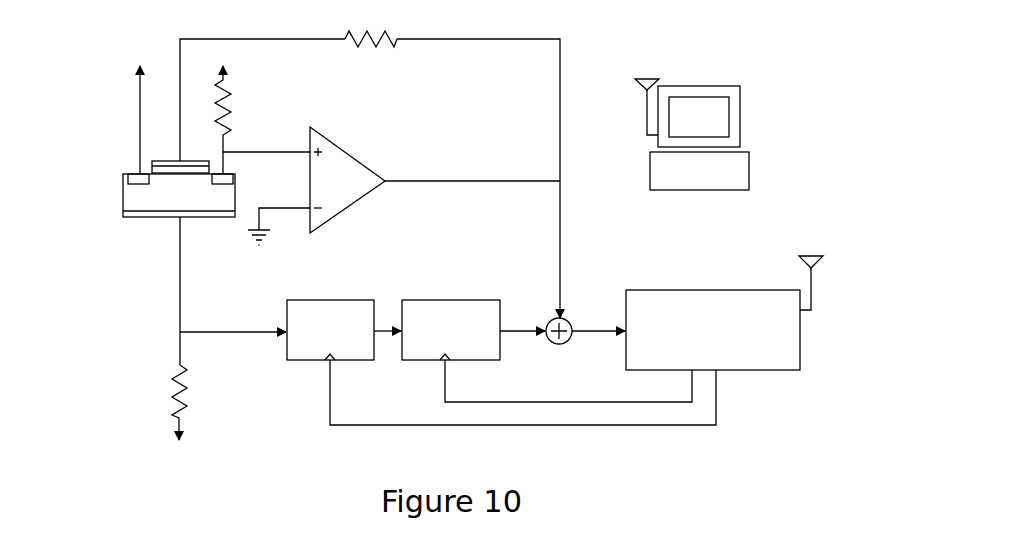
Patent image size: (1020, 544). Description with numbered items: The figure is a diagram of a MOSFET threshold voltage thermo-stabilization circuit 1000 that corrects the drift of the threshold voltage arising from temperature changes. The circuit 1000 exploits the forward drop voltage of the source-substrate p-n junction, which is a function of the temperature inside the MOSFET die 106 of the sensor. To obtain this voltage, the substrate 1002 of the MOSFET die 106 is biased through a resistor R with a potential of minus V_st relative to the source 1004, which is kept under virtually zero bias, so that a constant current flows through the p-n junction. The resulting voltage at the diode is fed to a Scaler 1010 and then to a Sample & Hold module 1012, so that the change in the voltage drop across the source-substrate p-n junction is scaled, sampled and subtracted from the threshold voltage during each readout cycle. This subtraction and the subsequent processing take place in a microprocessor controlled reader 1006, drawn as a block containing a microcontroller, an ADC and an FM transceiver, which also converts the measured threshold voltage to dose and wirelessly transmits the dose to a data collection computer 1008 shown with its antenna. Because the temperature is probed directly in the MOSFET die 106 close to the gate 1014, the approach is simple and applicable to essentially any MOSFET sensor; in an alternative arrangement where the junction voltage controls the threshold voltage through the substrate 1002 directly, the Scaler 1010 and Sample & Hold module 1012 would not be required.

The MOSFET threshold voltage thermo-stabilization circuit 1000 is at (736, 21).
The MOSFET die 106 is at (110, 195).
The substrate 1002 is at (147, 218).
The source 1004 is at (229, 174).
The gate 1014 is at (163, 160).
The microprocessor controlled reader 1006 is at (740, 289).
The data collection computer 1008 is at (630, 162).
The Scaler 1010 is at (330, 299).
The Sample & Hold module 1012 is at (452, 299).